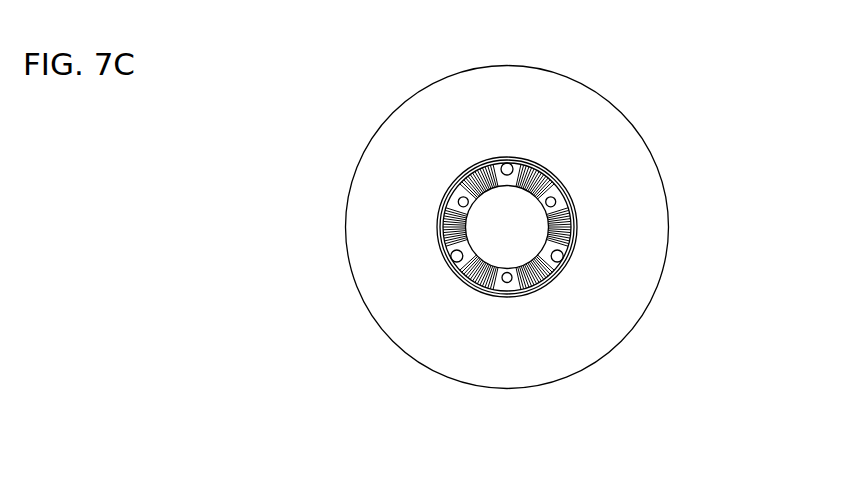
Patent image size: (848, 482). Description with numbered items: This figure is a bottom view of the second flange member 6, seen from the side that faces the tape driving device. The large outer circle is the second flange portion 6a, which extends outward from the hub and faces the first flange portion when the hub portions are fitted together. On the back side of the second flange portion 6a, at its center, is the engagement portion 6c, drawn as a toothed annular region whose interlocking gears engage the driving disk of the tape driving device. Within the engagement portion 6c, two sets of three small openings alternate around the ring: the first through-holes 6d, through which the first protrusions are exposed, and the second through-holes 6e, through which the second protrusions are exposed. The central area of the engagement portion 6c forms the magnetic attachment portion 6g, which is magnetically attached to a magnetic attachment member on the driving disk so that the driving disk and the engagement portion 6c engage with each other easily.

The second flange member 6 is at (812, 426).
The second flange portion 6a is at (622, 107).
The engagement portion 6c is at (578, 227).
The first through-holes 6d is at (510, 163).
The second through-holes 6e is at (460, 199).
The magnetic attachment portion 6g is at (485, 233).